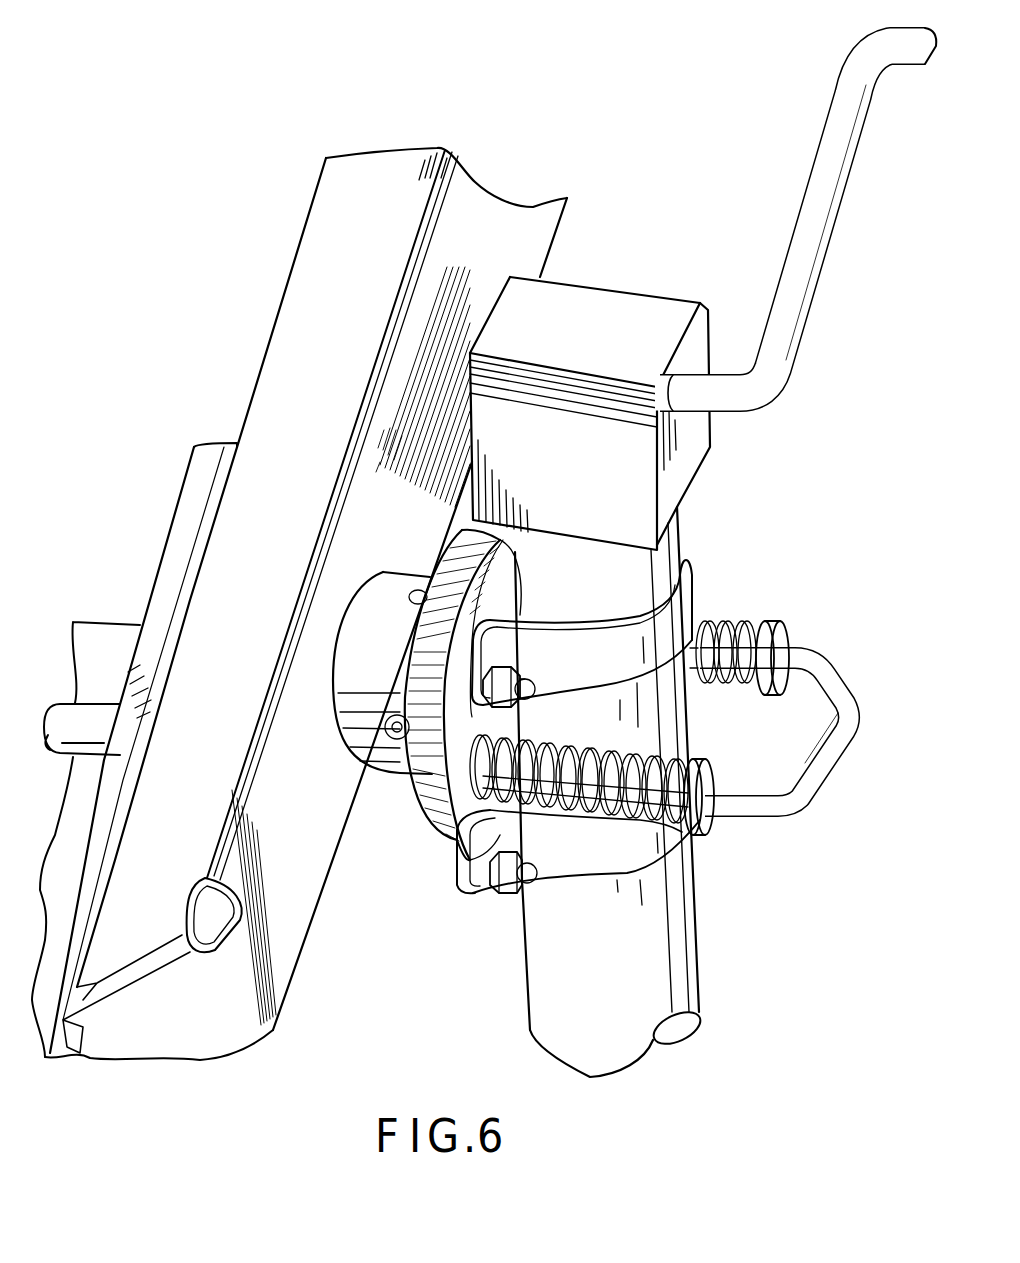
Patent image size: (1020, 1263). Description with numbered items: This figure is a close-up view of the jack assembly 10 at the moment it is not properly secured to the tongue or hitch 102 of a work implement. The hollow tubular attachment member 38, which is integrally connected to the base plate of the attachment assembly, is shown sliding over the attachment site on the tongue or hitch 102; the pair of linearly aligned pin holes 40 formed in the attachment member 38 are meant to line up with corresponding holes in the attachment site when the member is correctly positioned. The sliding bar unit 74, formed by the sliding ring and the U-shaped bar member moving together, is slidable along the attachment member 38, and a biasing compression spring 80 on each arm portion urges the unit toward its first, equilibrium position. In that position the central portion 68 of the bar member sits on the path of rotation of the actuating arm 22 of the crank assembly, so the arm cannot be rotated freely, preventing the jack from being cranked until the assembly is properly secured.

The jack assembly 10 is at (736, 864).
The actuating arm 22 is at (793, 320).
The attachment member 38 is at (360, 640).
The pin holes 40 is at (428, 582).
The central portion 68 is at (800, 790).
The sliding bar unit 74 is at (832, 645).
The compression spring 80 is at (637, 878).
The tongue or hitch 102 is at (300, 362).